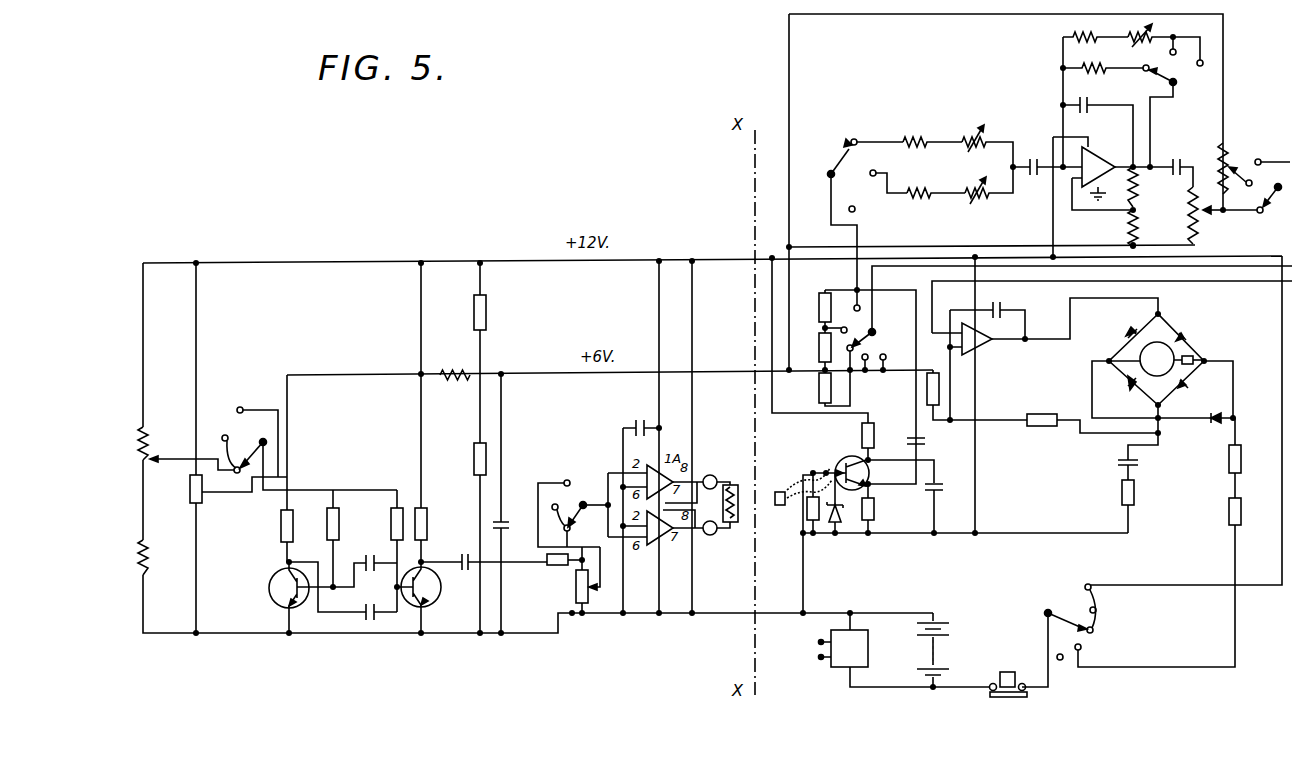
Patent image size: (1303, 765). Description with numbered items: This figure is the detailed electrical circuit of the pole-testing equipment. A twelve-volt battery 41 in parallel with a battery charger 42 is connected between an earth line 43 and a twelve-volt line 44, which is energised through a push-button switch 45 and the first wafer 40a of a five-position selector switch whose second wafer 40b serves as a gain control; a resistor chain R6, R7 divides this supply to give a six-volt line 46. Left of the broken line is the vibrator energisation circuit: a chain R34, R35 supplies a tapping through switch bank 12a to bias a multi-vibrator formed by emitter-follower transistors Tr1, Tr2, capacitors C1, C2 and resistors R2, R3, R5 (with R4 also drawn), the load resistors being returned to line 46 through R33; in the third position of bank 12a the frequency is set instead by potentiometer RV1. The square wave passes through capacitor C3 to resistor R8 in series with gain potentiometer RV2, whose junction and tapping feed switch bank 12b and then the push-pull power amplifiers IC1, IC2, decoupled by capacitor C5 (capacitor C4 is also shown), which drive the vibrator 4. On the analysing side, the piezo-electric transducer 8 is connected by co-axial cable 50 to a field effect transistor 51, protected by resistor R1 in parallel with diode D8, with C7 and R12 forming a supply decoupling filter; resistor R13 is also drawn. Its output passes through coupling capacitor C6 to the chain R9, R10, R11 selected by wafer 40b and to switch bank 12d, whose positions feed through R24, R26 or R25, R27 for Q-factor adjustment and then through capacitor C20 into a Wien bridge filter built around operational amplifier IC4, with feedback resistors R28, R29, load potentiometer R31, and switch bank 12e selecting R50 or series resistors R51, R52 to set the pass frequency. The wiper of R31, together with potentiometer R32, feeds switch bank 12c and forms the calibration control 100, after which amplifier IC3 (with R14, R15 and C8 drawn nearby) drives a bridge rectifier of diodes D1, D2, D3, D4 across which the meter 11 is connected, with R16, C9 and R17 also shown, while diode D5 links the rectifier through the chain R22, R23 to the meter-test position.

The 12-volt line 44 is at (525, 262).
The 6-volt line 46 is at (535, 373).
The earth line 43 is at (770, 613).
The switch bank 12a is at (298, 434).
The switch bank 12b is at (573, 513).
The switch bank 12c is at (1256, 175).
The switch bank 12d is at (855, 184).
The switch bank 12e is at (1170, 102).
The wafer 40a is at (1066, 628).
The wafer 40b is at (1058, 308).
The battery 41 is at (958, 626).
The battery charger 42 is at (838, 662).
The push-button switch 45 is at (1005, 675).
The co-axial cable 50 is at (799, 488).
The field effect transistor 51 is at (852, 459).
The piezo-electric transducer 8 is at (779, 500).
The vibrator 4 is at (722, 505).
The meter 11 is at (1145, 359).
The calibration control 100 is at (1206, 222).
The resistor R1 is at (805, 510).
The load resistor R2 is at (273, 468).
The resistor R3 is at (318, 538).
The resistor R4 is at (380, 551).
The load resistor R5 is at (430, 523).
The potentiometer chain resistor R6 is at (470, 300).
The potentiometer chain resistor R7 is at (467, 455).
The resistor R8 is at (553, 570).
The resistor R9 is at (819, 300).
The resistor R10 is at (813, 348).
The resistor R11 is at (822, 388).
The resistor R12 is at (860, 430).
The resistor R13 is at (882, 517).
The resistor R14 is at (926, 390).
The resistor R15 is at (1054, 435).
The resistor R16 is at (1192, 358).
The resistor R17 is at (1112, 506).
The resistor R22 is at (1172, 582).
The resistor R23 is at (1248, 458).
The resistor R24 is at (932, 132).
The resistor R25 is at (934, 206).
The adjustable resistor R26 is at (987, 135).
The adjustable resistor R27 is at (989, 197).
The feedback resistor R28 is at (1146, 187).
The feedback resistor R29 is at (1148, 228).
The load potentiometer R31 is at (1193, 215).
The potentiometer R32 is at (1208, 165).
The resistance R33 is at (450, 363).
The resistance R34 is at (186, 448).
The resistance R35 is at (156, 557).
The resistor R50 is at (1103, 60).
The resistor R51 is at (1095, 92).
The adjustable resistor R52 is at (1164, 38).
The potentiometer RV1 is at (218, 489).
The potentiometer RV2 is at (570, 580).
The capacitor C1 is at (365, 561).
The capacitor C2 is at (343, 599).
The capacitor C3 is at (484, 551).
The capacitor C4 is at (510, 516).
The de-coupling capacitor C5 is at (640, 419).
The coupling capacitor C6 is at (927, 442).
The capacitor C7 is at (942, 497).
The capacitor C8 is at (987, 313).
The capacitor C9 is at (1138, 442).
The capacitor C20 is at (1047, 182).
The bridge rectifier diode D1 is at (1119, 337).
The bridge rectifier diode D2 is at (1189, 324).
The bridge rectifier diode D3 is at (1118, 389).
The bridge rectifier diode D4 is at (1192, 391).
The diode D5 is at (1162, 404).
The diode D8 is at (835, 540).
The emitter-follower transistor Tr1 is at (273, 597).
The emitter-follower transistor Tr2 is at (427, 597).
The integrated circuit power amplifier IC1 is at (628, 474).
The integrated circuit power amplifier IC2 is at (656, 545).
The integrated circuit amplifier IC3 is at (982, 349).
The integrated circuit operational amplifier IC4 is at (1098, 152).